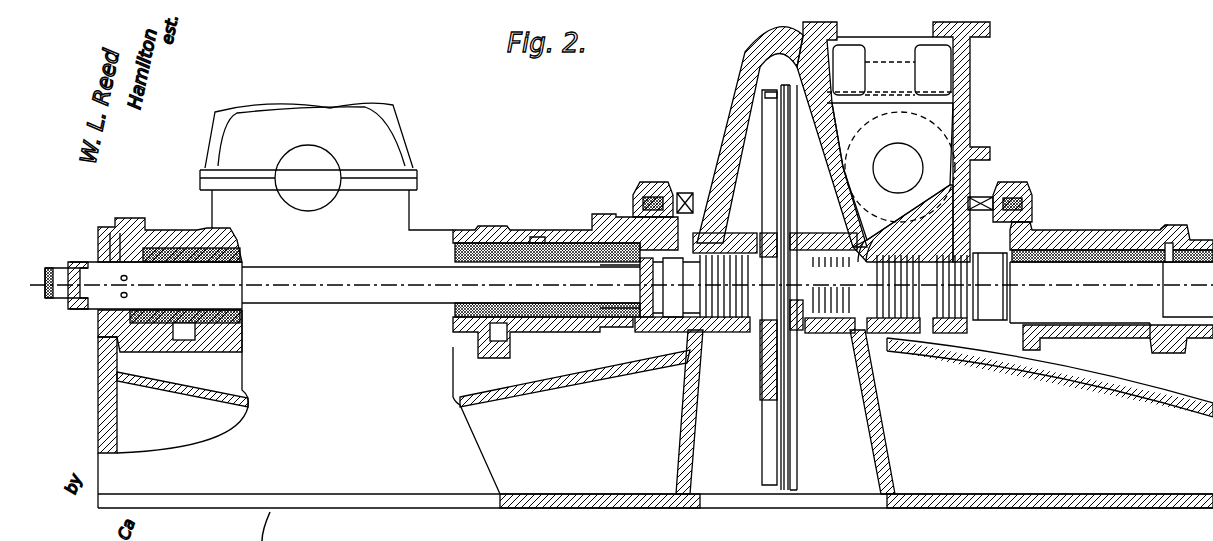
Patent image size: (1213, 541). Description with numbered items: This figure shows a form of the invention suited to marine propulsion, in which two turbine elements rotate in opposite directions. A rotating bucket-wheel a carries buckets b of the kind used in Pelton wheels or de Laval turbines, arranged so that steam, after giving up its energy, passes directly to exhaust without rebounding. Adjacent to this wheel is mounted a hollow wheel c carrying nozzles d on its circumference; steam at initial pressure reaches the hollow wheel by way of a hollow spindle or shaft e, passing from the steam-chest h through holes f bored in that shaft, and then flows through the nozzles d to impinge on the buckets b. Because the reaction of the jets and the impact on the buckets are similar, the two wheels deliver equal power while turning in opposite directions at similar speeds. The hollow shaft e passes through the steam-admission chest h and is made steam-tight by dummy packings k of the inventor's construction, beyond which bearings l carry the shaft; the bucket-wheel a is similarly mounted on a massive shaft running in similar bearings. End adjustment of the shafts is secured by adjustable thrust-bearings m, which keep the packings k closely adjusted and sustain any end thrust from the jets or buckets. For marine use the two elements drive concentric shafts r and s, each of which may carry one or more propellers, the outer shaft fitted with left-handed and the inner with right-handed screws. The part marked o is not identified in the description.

The oil reservoir pedestal cap o is at (388, 142).
The inner concentric shaft s is at (62, 267).
The outer concentric shaft r is at (97, 308).
The bearings l is at (183, 240).
The adjustable thrust-bearings m is at (1198, 240).
The bucket-wheel a is at (762, 201).
The buckets b is at (762, 96).
The hollow nozzle-wheel c is at (797, 450).
The nozzles d is at (787, 86).
The hollow spindle or shaft e is at (808, 253).
The holes f is at (870, 226).
The steam-chest h is at (873, 152).
The dummy packings k is at (723, 337).